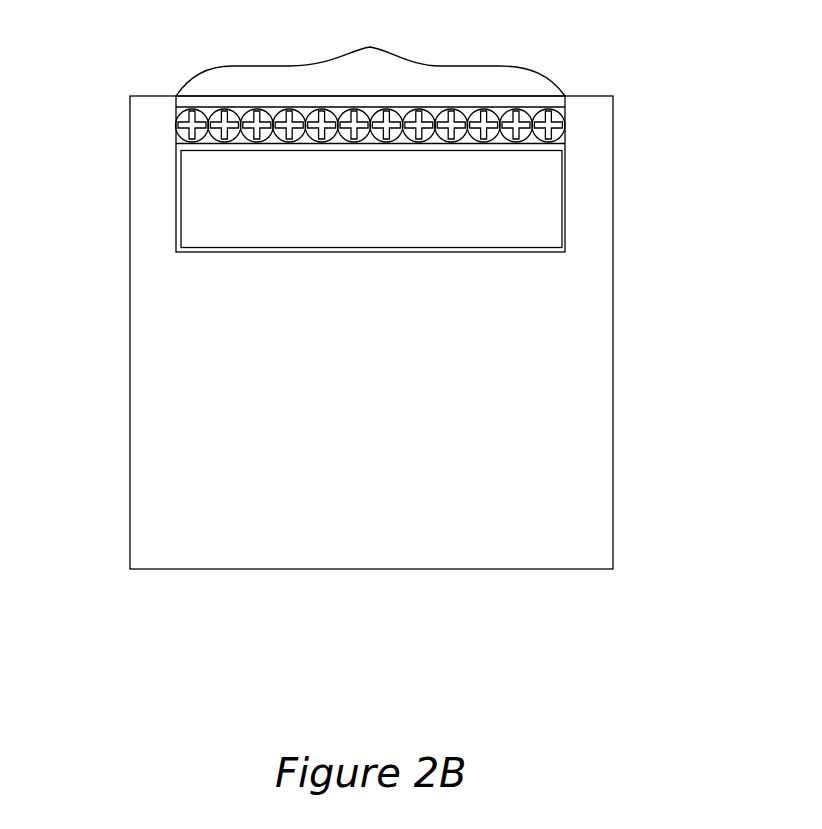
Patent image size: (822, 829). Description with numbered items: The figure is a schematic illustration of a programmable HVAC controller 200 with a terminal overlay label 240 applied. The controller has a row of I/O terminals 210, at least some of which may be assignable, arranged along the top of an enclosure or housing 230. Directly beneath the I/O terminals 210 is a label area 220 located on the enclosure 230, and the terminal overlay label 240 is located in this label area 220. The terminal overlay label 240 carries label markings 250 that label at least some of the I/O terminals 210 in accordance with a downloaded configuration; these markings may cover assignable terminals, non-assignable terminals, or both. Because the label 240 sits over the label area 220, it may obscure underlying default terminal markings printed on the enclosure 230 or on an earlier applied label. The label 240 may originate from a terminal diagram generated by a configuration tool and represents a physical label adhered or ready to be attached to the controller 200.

The programmable HVAC controller 200 is at (418, 296).
The I/O terminals 210 is at (370, 60).
The label area 220 is at (175, 190).
The enclosure 230 is at (158, 412).
The terminal overlay label 240 is at (542, 230).
The label markings 250 is at (443, 242).